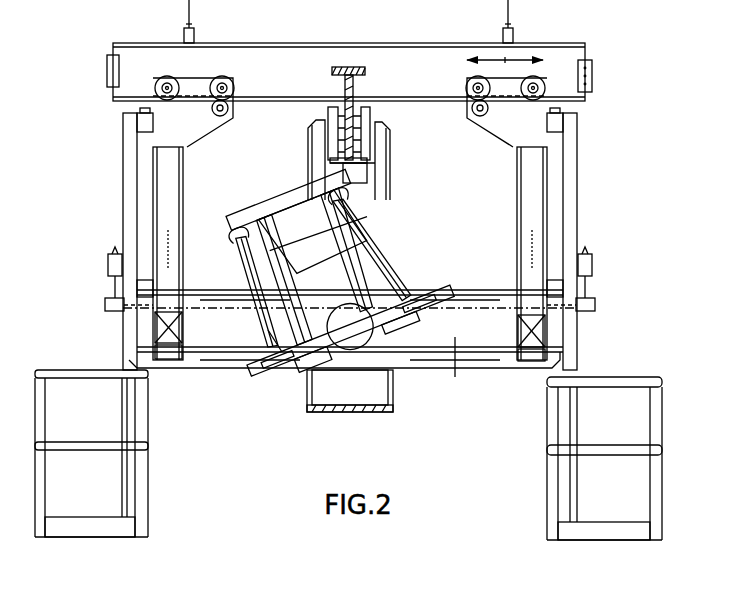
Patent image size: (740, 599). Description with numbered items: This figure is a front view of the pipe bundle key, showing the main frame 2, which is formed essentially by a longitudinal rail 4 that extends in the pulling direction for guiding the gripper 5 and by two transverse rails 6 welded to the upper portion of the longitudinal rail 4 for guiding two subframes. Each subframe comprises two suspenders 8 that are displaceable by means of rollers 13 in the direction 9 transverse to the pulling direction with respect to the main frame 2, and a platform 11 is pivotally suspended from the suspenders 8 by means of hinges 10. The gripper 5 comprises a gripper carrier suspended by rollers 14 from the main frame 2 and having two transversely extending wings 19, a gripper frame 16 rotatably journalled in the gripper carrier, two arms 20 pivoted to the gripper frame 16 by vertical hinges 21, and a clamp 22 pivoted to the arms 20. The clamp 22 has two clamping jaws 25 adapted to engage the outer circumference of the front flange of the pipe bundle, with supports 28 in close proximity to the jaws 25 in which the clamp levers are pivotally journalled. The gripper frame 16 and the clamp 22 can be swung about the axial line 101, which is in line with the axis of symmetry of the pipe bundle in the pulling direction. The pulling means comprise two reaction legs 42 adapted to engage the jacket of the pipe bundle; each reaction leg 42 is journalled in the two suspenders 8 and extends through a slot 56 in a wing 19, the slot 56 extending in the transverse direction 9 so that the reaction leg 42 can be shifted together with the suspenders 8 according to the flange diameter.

The main frame 2 is at (596, 70).
The longitudinal rail 4 is at (348, 67).
The gripper 5 is at (293, 382).
The transverse rail 6 is at (407, 60).
The suspender 8 is at (350, 253).
The transverse direction 9 is at (495, 60).
The hinge 10 is at (566, 130).
The platform 11 is at (151, 505).
The roller 13 is at (170, 90).
The roller 14 is at (355, 172).
The gripper frame 16 is at (292, 207).
The wing 19 is at (230, 302).
The arm 20 is at (375, 287).
The vertical hinge 21 is at (392, 292).
The clamp 22 is at (272, 343).
The clamping jaw 25 is at (254, 367).
The support 28 is at (259, 381).
The reaction leg 42 is at (160, 333).
The slot 56 is at (193, 369).
The axial line 101 is at (350, 330).